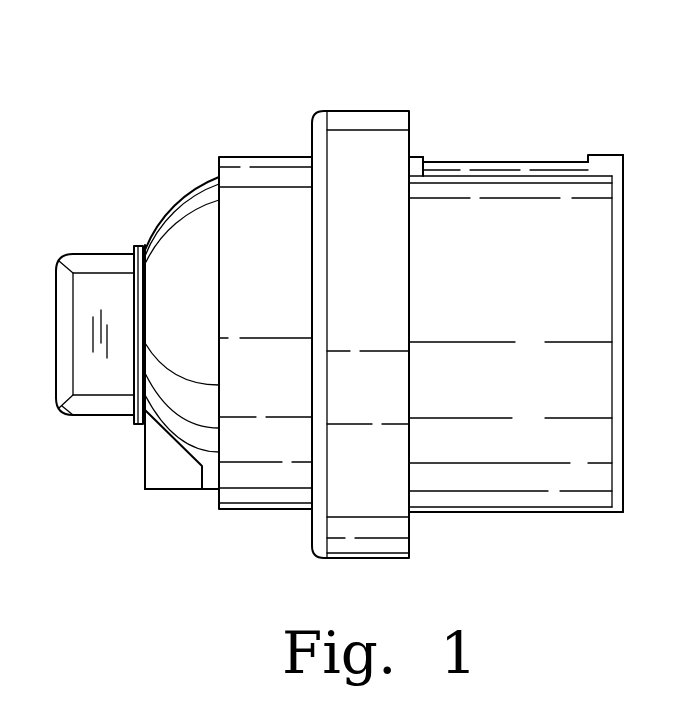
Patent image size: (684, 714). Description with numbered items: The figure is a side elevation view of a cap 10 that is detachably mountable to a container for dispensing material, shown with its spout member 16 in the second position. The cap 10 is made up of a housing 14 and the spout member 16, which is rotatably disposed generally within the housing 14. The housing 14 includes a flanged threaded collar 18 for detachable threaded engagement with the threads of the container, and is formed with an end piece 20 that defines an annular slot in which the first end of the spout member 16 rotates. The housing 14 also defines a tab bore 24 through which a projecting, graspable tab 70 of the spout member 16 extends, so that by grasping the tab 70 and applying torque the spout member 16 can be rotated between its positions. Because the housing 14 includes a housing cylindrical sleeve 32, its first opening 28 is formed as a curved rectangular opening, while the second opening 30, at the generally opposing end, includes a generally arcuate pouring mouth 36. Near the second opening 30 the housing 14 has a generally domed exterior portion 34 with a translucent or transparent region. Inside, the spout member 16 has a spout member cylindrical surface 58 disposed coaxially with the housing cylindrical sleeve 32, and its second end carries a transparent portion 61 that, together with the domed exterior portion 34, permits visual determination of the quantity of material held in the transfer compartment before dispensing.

The cap 10 is at (150, 134).
The housing 14 is at (219, 509).
The spout member 16 is at (68, 260).
The flanged threaded collar 18 is at (365, 111).
The end piece 20 is at (616, 330).
The tab bore 24 is at (133, 246).
The first opening 28 is at (444, 172).
The second opening 30 is at (145, 455).
The housing cylindrical sleeve 32 is at (521, 512).
The domed exterior portion 34 is at (168, 204).
The pouring mouth 36 is at (146, 489).
The spout member cylindrical surface 58 is at (544, 160).
The transparent portion 61 is at (198, 178).
The tab 70 is at (88, 418).